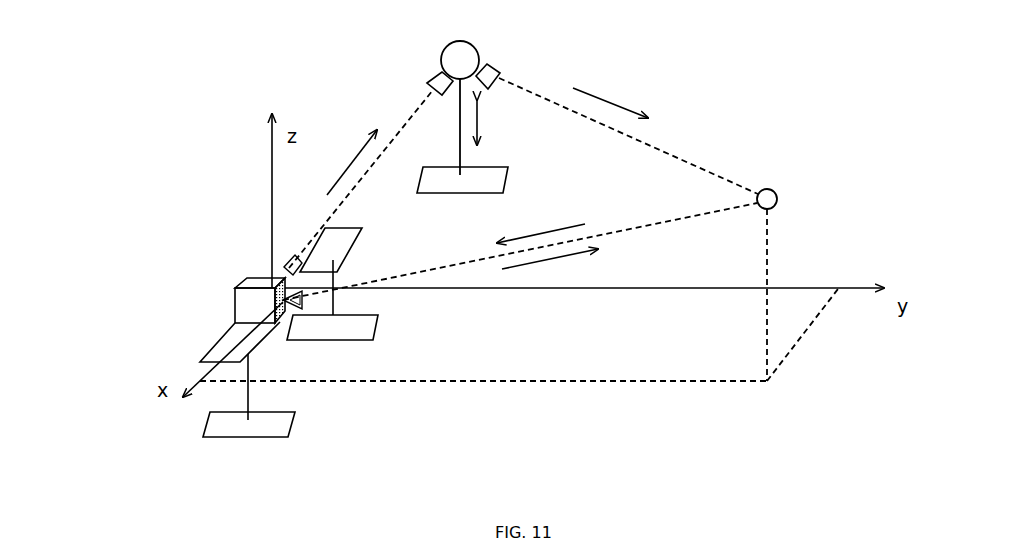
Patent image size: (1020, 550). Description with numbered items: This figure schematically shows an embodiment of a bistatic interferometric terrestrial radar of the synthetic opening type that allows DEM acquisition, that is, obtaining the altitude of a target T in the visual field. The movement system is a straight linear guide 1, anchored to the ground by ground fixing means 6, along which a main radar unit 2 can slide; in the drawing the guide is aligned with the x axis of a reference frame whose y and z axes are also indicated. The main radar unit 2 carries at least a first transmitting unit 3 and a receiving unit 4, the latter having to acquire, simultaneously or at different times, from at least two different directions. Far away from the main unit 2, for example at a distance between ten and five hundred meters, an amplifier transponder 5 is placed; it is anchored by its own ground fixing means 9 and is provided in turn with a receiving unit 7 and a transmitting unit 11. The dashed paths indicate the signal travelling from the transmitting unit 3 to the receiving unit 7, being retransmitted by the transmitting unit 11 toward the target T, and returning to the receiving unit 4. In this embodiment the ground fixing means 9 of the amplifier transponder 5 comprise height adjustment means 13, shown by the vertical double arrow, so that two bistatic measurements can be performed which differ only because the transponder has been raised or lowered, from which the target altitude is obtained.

The linear guide 1 is at (230, 337).
The main radar unit 2 is at (247, 303).
The first transmitting unit 3 is at (288, 272).
The receiving unit 4 is at (300, 300).
The amplifier transponder 5 is at (455, 55).
The ground fixing means 6 is at (305, 332).
The receiving unit 7 is at (438, 82).
The ground fixing means 9 is at (547, 180).
The transmitting unit 11 is at (485, 63).
The height adjustment means 13 is at (462, 163).
The target T is at (768, 190).